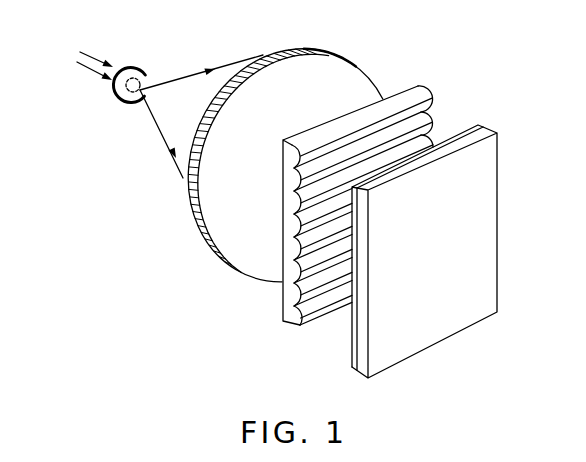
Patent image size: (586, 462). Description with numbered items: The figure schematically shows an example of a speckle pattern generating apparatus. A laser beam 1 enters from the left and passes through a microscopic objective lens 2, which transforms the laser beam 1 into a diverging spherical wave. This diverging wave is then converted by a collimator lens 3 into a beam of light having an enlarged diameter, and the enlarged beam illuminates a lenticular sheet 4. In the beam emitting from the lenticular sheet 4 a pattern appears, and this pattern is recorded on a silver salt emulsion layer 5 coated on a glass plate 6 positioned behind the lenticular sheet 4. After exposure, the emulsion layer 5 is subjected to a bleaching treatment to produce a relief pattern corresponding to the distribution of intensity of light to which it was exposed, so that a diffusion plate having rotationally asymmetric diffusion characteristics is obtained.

The laser beam 1 is at (93, 54).
The microscopic objective lens 2 is at (128, 68).
The collimator lens 3 is at (309, 50).
The lenticular sheet 4 is at (412, 87).
The silver salt emulsion layer 5 is at (467, 135).
The glass plate 6 is at (490, 131).